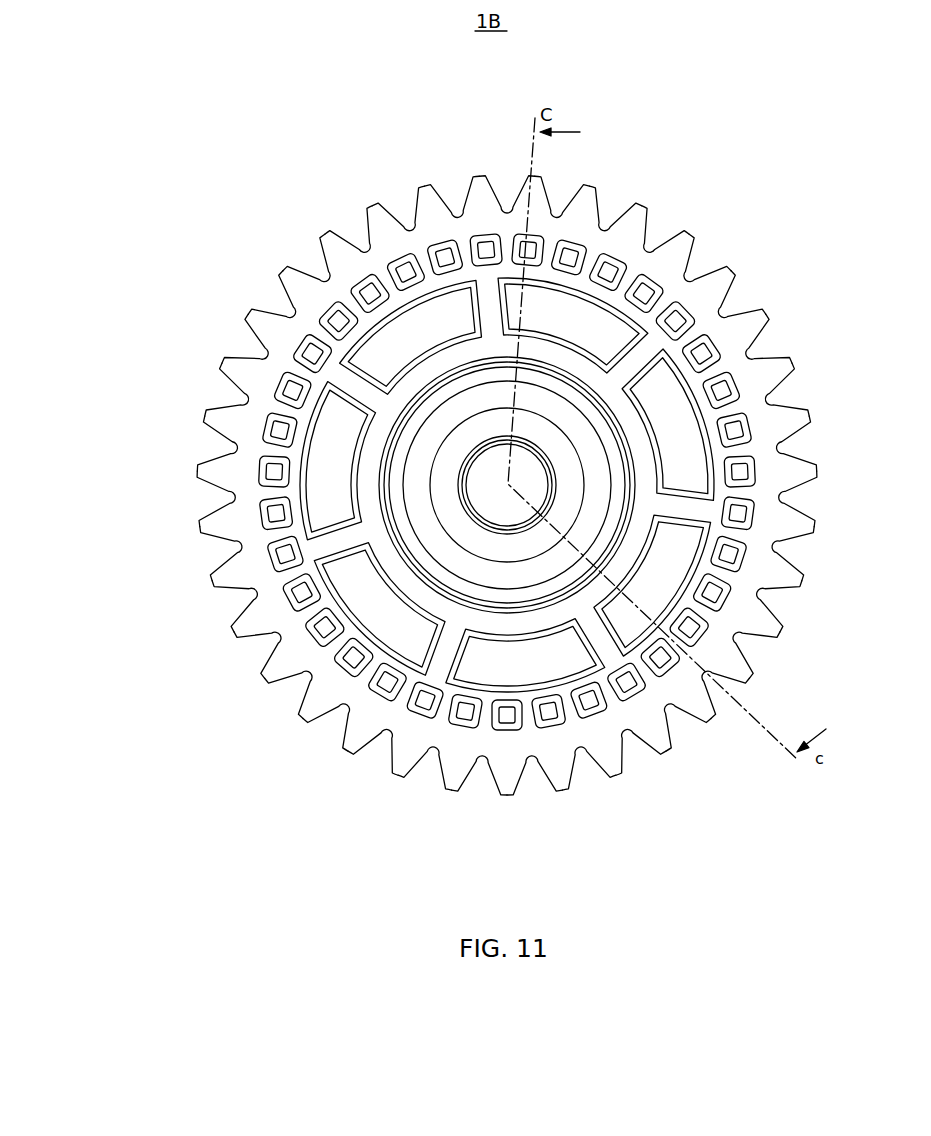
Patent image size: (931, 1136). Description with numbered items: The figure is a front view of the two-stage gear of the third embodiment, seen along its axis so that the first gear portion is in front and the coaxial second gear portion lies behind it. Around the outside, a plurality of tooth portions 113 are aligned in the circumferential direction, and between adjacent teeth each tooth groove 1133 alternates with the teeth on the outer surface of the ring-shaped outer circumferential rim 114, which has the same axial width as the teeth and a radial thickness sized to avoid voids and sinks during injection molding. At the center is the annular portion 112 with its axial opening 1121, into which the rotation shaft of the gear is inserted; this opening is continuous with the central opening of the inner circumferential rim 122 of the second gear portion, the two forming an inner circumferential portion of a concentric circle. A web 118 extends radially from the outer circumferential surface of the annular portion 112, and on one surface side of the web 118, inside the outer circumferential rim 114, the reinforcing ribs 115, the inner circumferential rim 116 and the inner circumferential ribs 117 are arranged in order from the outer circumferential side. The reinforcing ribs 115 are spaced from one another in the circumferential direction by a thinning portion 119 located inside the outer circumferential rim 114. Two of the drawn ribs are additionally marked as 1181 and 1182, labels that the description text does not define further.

The annular portion 112 is at (380, 437).
The opening 1121 is at (438, 580).
The tooth portions 113 is at (420, 195).
The tooth groove 1133 is at (407, 225).
The outer circumferential rim 114 is at (397, 243).
The reinforcing ribs 115 is at (458, 243).
The inner circumferential rim 116 is at (392, 300).
The inner circumferential ribs 117 is at (350, 380).
The web 118 is at (397, 348).
The first magnet 1181 is at (572, 262).
The second magnet 1182 is at (557, 313).
The thinning portion 119 is at (480, 229).
The inner circumferential rim 122 is at (445, 487).